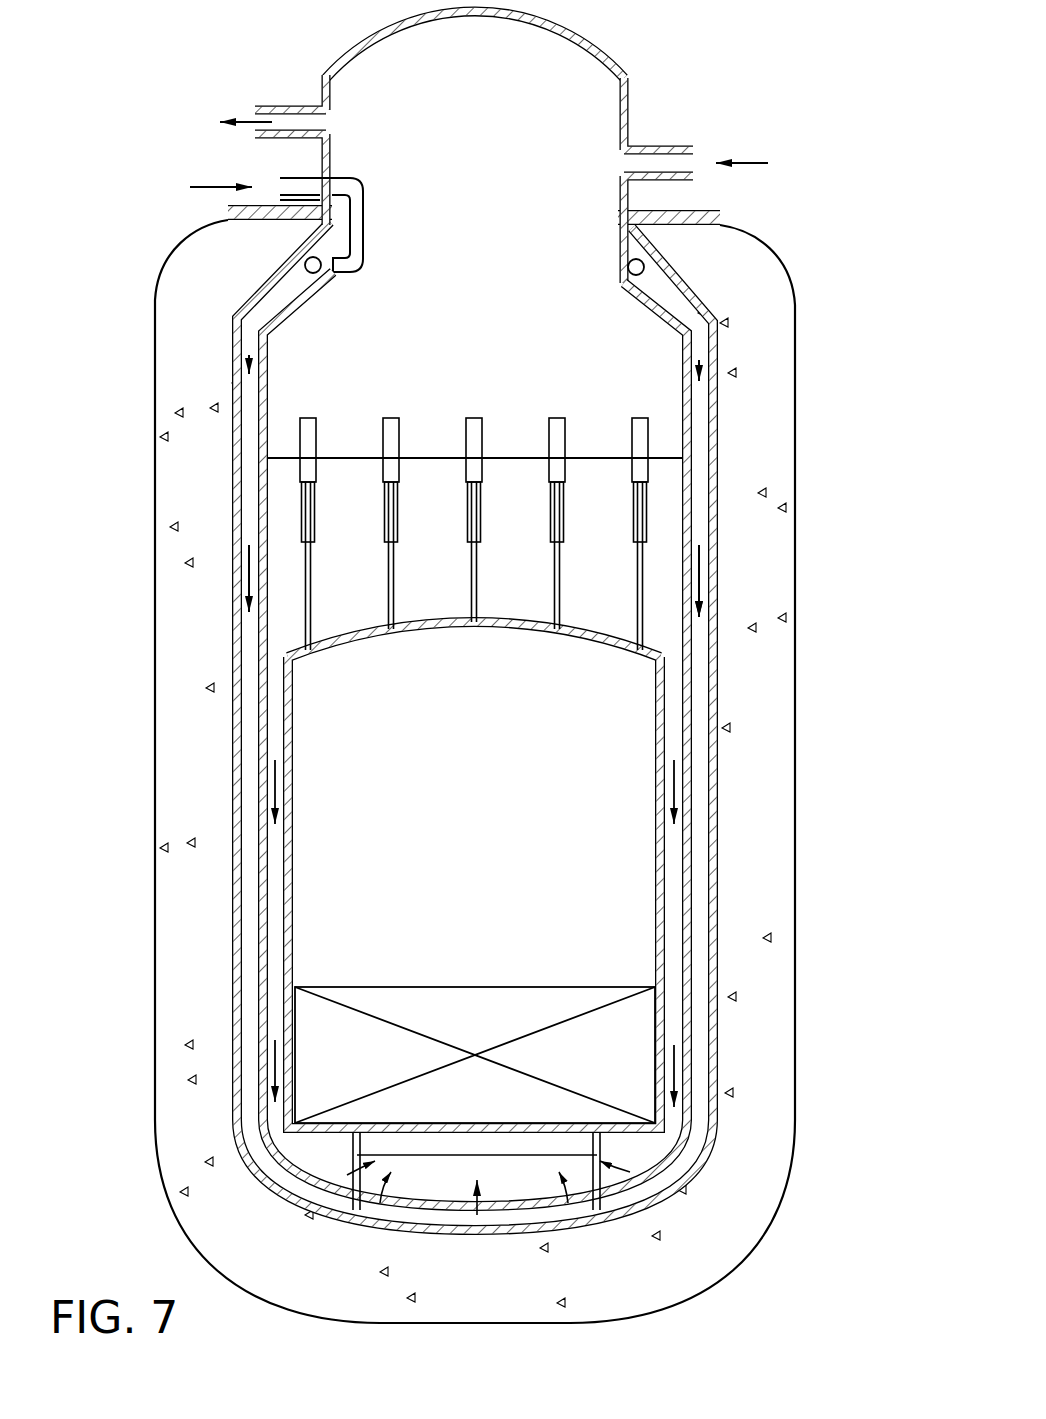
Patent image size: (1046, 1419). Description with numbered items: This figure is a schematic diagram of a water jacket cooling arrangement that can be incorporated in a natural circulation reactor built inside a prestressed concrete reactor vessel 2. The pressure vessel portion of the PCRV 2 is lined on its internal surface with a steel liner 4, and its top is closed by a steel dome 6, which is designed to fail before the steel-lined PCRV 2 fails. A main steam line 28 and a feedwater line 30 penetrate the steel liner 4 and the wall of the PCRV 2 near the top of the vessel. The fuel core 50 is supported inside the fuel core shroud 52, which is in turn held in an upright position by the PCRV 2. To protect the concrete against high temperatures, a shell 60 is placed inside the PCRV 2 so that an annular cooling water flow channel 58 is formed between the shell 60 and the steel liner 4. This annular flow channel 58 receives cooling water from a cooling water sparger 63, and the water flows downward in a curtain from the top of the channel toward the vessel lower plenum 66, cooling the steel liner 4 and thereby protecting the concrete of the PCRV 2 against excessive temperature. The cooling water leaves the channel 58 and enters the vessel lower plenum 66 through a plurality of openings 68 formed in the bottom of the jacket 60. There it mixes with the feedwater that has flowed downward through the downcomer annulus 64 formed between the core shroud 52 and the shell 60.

The prestressed concrete reactor vessel 2 is at (800, 838).
The steel liner 4 is at (716, 767).
The steel dome 6 is at (557, 28).
The main steam line 28 is at (290, 106).
The feedwater line 30 is at (655, 147).
The fuel core 50 is at (462, 987).
The fuel core shroud 52 is at (659, 977).
The annular cooling water flow channel 58 is at (703, 688).
The shell 60 is at (687, 912).
The cooling water sparger 63 is at (303, 300).
The downcomer annulus 64 is at (272, 915).
The vessel lower plenum 66 is at (535, 1191).
The openings 68 is at (470, 1208).